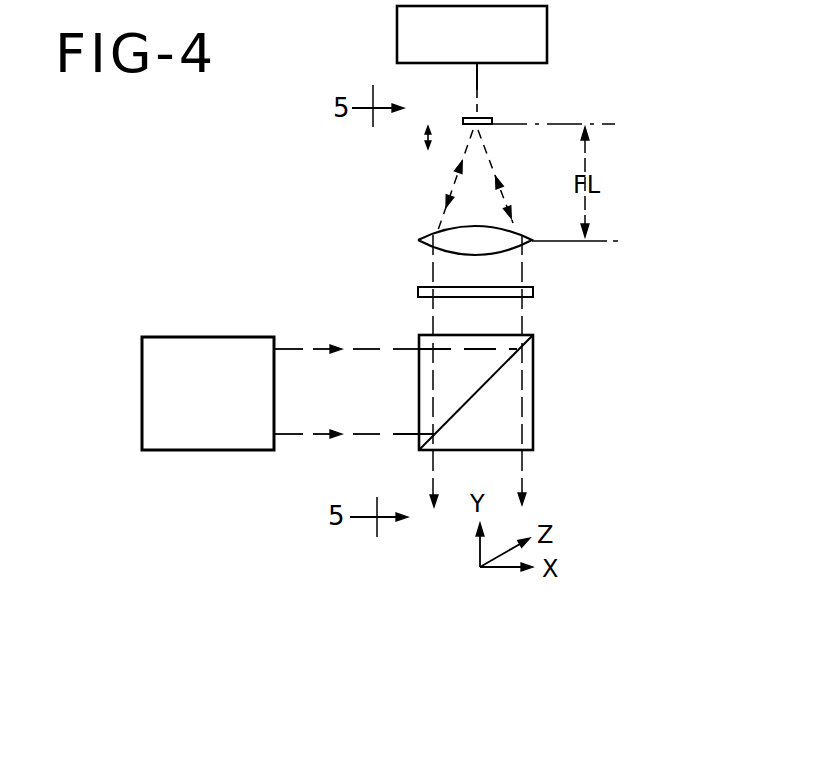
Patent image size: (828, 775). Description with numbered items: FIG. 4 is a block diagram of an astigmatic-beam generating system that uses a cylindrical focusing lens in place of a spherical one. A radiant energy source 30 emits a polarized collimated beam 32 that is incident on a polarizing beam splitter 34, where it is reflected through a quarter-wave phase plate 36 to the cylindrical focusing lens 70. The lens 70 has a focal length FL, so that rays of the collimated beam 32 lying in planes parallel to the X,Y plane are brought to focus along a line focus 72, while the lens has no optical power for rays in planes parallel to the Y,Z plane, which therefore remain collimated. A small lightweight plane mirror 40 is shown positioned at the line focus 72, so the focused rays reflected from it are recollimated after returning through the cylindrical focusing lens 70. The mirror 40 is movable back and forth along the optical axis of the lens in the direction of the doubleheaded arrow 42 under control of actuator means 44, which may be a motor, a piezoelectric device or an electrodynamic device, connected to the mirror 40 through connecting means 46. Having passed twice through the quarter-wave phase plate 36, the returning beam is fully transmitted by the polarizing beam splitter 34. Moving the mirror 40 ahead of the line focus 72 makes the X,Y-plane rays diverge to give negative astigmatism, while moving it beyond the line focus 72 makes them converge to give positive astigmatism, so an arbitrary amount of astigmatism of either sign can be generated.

The radiant energy source 30 is at (160, 337).
The collimated beam 32 is at (357, 347).
The polarizing beam splitter 34 is at (535, 420).
The quarter-wave phase plate 36 is at (533, 292).
The plane mirror 40 is at (492, 118).
The doubleheaded arrow 42 is at (422, 140).
The actuator means 44 is at (547, 40).
The connecting means 46 is at (477, 78).
The cylindrical focusing lens 70 is at (425, 238).
The line focus 72 is at (478, 128).